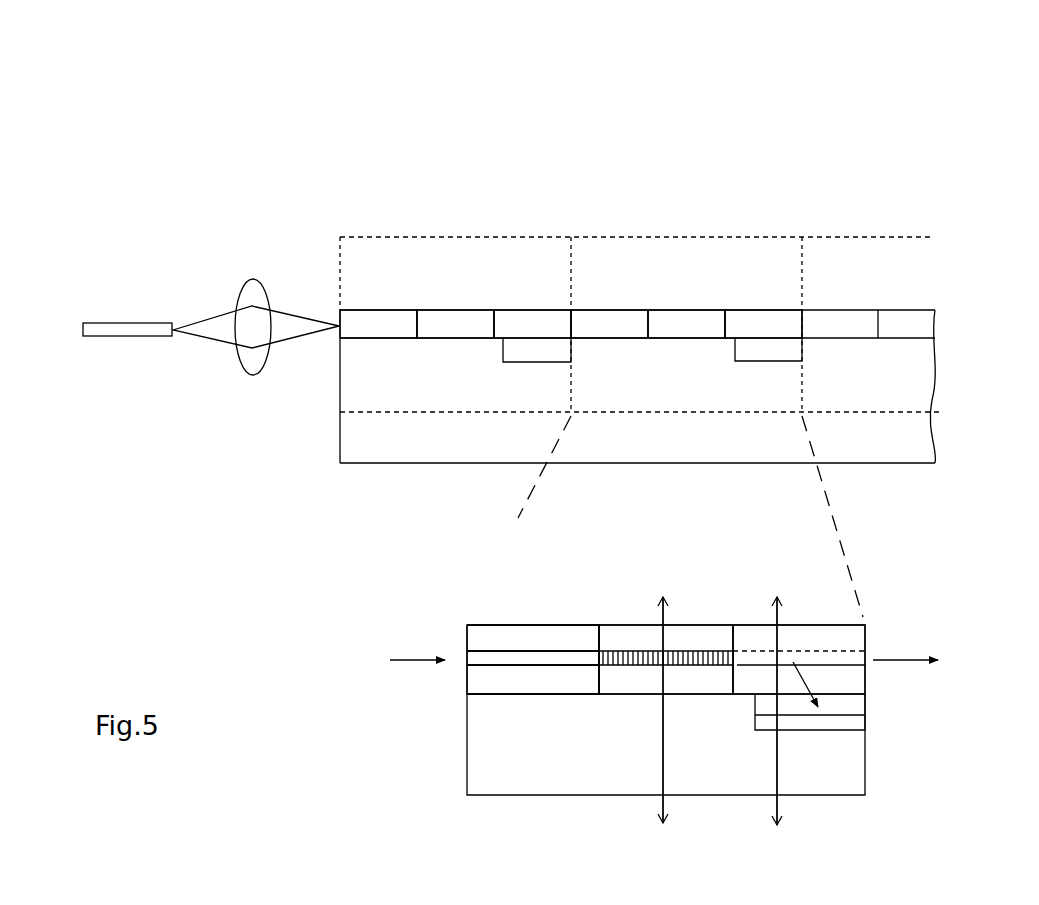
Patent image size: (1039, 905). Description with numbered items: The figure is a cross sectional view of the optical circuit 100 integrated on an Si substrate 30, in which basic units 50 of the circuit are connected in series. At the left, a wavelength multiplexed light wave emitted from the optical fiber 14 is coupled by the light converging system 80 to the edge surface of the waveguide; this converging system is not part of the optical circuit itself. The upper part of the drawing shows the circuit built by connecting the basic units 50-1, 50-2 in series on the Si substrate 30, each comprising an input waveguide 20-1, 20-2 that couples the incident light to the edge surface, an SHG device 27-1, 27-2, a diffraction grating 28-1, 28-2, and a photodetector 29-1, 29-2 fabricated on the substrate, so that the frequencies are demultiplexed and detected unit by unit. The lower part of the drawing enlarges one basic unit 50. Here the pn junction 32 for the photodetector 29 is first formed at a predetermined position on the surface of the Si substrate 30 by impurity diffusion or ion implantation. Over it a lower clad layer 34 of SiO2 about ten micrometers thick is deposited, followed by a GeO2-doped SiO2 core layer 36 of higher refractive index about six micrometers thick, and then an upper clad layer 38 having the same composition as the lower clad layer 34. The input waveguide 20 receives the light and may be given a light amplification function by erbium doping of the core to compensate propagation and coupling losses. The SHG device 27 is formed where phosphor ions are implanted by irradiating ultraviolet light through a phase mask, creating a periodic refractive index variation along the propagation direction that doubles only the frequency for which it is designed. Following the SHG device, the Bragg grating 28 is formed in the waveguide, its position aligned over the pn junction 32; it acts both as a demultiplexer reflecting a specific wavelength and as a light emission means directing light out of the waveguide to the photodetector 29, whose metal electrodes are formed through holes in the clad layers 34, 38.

The optical circuit 100 is at (796, 202).
The optical fiber 14 is at (115, 327).
The light converging system 80 is at (187, 265).
The basic unit 50-1 is at (477, 236).
The basic unit 50-2 is at (669, 236).
The input waveguide 20-1 is at (372, 330).
The SHG device 27-1 is at (451, 330).
The diffraction grating 28-1 is at (529, 330).
The photodetector 29-1 is at (518, 353).
The input waveguide 20-2 is at (603, 330).
The SHG device 27-2 is at (678, 330).
The diffraction grating 28-2 is at (763, 330).
The photodetector 29-2 is at (752, 352).
The Si substrate 30 is at (380, 448).
The basic unit 50 is at (886, 594).
The input waveguide 20 is at (527, 611).
The core layer 36 is at (512, 648).
The upper clad layer 38 is at (573, 638).
The lower clad layer 34 is at (488, 682).
The SHG device 27 is at (630, 610).
The Bragg grating 28 is at (828, 652).
The photodetector 29 is at (840, 703).
The pn junction 32 is at (847, 717).